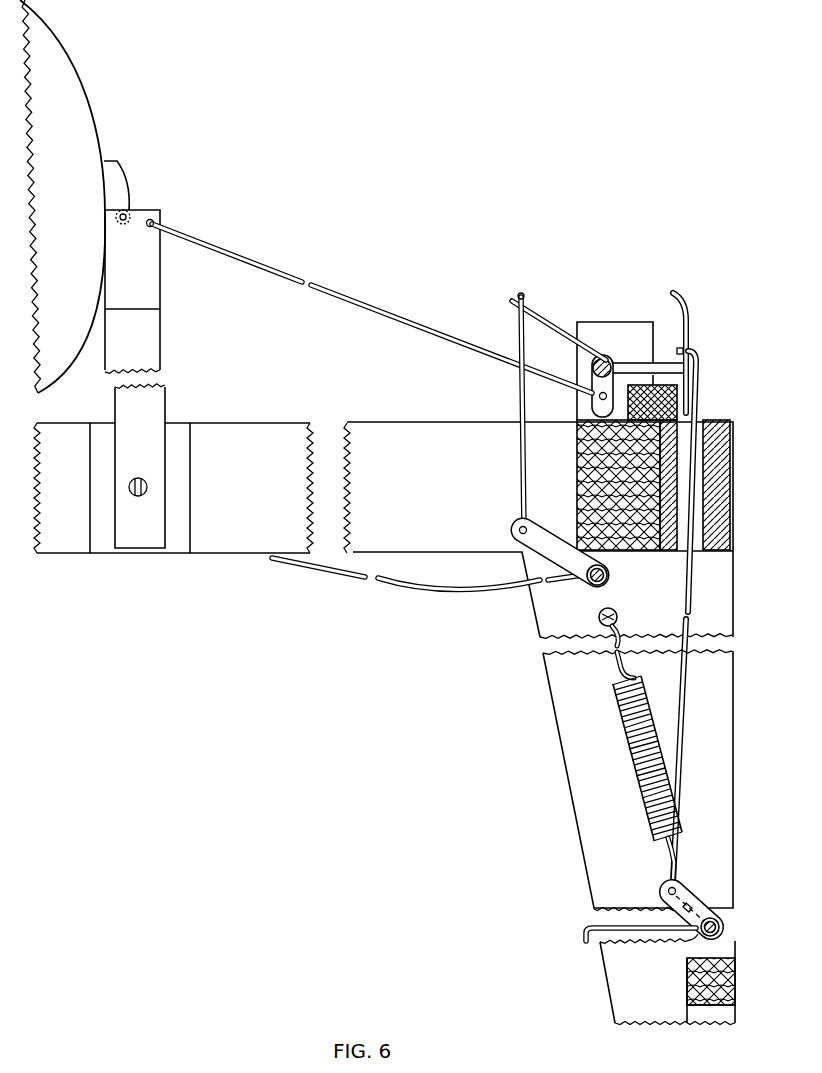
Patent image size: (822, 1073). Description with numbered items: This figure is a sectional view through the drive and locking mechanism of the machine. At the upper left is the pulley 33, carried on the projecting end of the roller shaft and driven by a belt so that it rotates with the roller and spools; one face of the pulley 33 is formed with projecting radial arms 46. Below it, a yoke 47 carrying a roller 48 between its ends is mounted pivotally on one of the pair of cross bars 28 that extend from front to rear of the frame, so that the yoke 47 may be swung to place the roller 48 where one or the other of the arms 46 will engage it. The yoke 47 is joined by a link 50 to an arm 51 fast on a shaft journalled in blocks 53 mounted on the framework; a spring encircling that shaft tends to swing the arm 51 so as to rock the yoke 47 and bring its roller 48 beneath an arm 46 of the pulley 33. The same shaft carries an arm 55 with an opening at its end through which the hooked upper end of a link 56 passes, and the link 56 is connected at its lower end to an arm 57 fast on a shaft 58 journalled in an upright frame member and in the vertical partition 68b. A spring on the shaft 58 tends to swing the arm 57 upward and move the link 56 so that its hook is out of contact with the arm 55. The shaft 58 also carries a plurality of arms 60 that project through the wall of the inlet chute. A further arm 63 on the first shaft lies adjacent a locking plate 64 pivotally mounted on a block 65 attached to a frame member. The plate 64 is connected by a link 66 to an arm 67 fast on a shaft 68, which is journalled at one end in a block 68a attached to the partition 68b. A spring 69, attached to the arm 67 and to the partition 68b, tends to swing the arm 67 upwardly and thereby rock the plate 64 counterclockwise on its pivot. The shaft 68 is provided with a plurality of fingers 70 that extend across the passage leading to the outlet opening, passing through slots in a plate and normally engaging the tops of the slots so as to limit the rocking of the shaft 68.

The pulley 33 is at (85, 93).
The radial arms 46 is at (118, 162).
The yoke 47 is at (163, 333).
The roller 48 is at (132, 213).
The cross bars 28 is at (216, 545).
The link 50 is at (352, 305).
The arm 55 is at (545, 317).
The link 56 is at (518, 393).
The arm 51 is at (592, 376).
The blocks 53 is at (628, 322).
The arm 63 is at (667, 363).
The locking plate 64 is at (680, 300).
The block 65 is at (628, 412).
The link 66 is at (702, 382).
The arm 57 is at (542, 523).
The shaft 58 is at (587, 587).
The arms 60 is at (425, 590).
The spring 69 is at (625, 740).
The partition 68b is at (735, 700).
The arm 67 is at (700, 900).
The shaft 68 is at (722, 925).
The fingers 70 is at (585, 928).
The block 68a is at (737, 968).